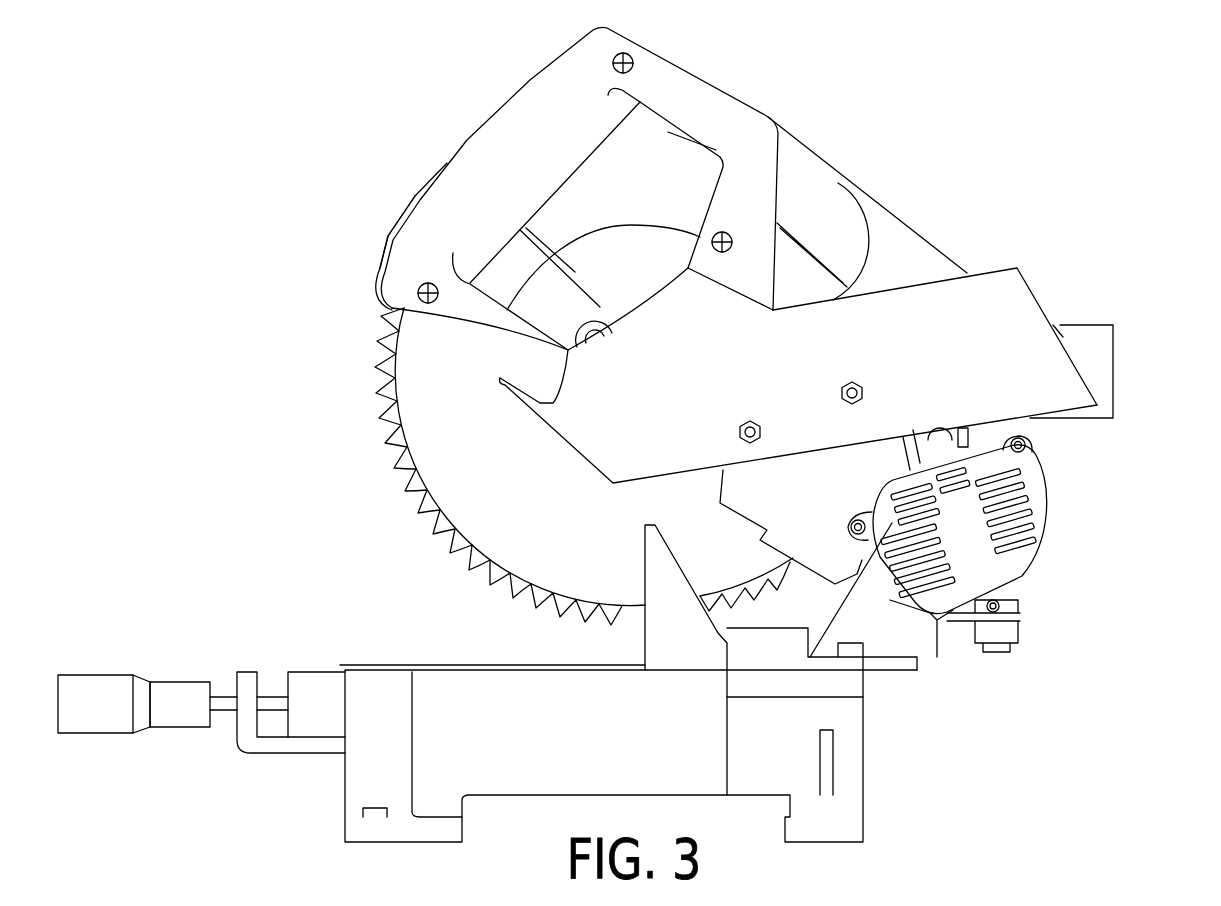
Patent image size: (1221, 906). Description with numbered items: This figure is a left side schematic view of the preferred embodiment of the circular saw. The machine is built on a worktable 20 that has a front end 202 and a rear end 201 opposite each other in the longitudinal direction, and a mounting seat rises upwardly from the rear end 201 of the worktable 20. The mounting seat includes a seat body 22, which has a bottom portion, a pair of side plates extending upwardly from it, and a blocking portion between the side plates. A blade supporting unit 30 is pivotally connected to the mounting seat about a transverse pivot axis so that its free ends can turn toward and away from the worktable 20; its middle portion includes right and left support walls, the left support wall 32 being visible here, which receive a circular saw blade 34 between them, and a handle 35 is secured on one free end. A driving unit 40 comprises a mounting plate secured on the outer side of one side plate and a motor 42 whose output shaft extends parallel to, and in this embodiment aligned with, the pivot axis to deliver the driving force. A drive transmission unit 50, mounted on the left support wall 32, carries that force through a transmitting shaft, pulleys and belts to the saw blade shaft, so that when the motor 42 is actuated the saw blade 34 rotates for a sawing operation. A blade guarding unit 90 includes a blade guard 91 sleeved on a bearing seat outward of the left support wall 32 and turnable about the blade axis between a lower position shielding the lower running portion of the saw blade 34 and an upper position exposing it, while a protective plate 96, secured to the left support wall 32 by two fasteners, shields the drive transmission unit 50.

The worktable 20 is at (863, 763).
The rear end 201 is at (863, 683).
The front end 202 is at (388, 665).
The seat body 22 is at (930, 633).
The blade supporting unit 30 is at (943, 254).
The left support wall 32 is at (897, 243).
The circular saw blade 34 is at (390, 403).
The handle 35 is at (552, 92).
The driving unit 40 is at (1019, 525).
The motor 42 is at (1047, 530).
The drive transmission unit 50 is at (886, 452).
The blade guarding unit 90 is at (408, 203).
The blade guard 91 is at (387, 240).
The protective plate 96 is at (982, 307).